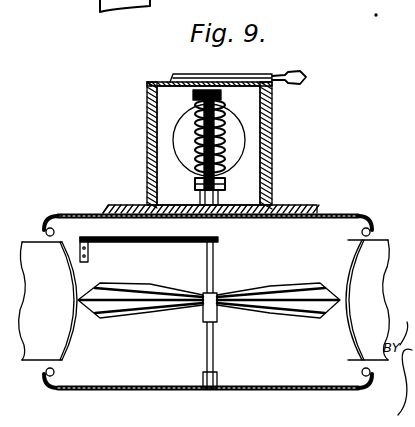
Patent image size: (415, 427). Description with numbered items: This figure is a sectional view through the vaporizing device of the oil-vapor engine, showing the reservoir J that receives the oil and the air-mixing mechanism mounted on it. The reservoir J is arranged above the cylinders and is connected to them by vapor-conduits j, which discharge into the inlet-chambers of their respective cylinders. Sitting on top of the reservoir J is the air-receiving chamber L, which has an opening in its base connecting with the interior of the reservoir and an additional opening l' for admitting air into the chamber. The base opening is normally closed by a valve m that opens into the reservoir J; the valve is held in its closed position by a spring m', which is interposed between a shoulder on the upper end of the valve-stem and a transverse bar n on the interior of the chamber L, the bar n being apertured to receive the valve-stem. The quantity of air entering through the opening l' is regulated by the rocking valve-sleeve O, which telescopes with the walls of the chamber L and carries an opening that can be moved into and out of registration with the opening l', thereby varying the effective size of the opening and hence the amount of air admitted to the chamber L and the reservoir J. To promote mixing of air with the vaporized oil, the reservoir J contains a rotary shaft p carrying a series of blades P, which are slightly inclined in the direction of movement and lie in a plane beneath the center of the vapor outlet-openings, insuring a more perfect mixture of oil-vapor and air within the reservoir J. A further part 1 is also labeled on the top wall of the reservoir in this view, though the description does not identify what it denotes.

The rocking valve-sleeve O is at (147, 106).
The air-receiving chamber L is at (160, 139).
The additional opening l' is at (243, 131).
The spring m' is at (253, 145).
The transverse bar n is at (195, 184).
The valve m is at (211, 197).
The housing top wall 1 is at (247, 219).
The reservoir J is at (76, 215).
The vapor-conduit j is at (378, 297).
The rotary shaft p is at (207, 268).
The blades P is at (268, 297).